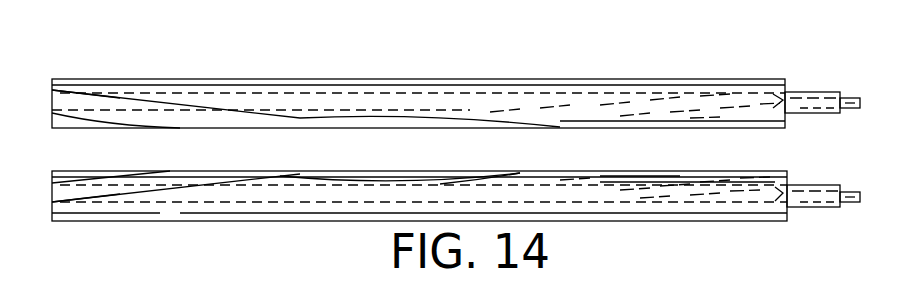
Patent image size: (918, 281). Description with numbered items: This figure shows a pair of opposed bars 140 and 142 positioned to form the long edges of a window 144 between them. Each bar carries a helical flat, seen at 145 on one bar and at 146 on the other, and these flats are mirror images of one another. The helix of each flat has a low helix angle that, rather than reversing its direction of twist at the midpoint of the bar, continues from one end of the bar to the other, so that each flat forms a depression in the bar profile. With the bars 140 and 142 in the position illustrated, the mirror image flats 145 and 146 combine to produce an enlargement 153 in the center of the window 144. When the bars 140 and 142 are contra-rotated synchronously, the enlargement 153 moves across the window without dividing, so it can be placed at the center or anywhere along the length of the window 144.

The bar 140 is at (744, 230).
The bar 142 is at (733, 74).
The window 144 is at (641, 156).
The helical flat 145 is at (67, 190).
The helical flat 146 is at (65, 102).
The enlargement 153 is at (469, 156).